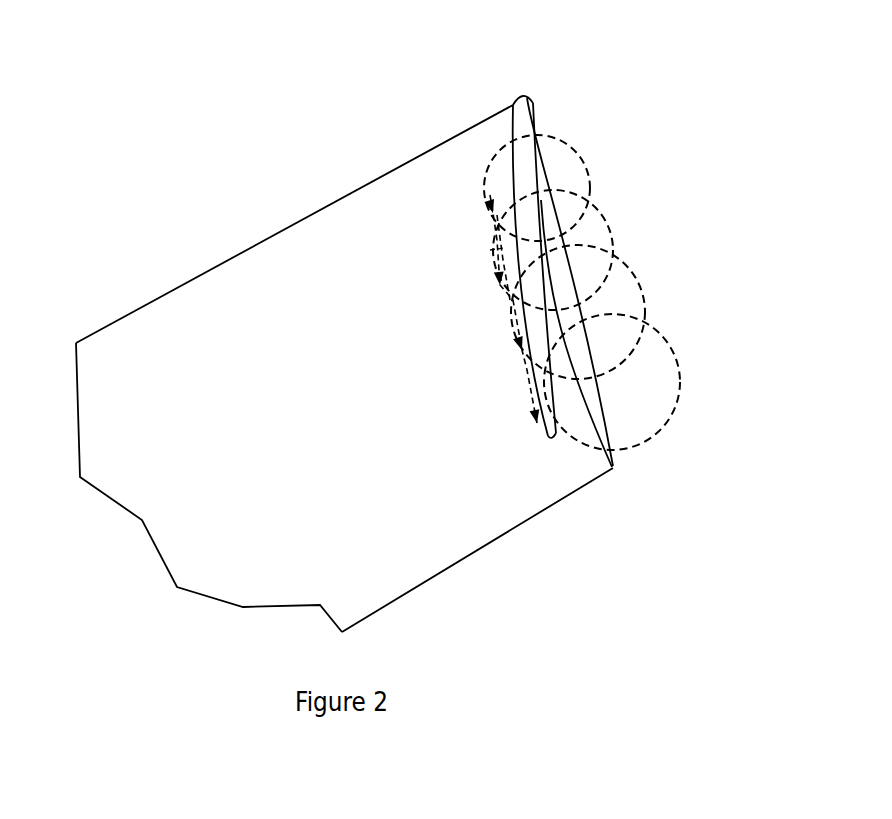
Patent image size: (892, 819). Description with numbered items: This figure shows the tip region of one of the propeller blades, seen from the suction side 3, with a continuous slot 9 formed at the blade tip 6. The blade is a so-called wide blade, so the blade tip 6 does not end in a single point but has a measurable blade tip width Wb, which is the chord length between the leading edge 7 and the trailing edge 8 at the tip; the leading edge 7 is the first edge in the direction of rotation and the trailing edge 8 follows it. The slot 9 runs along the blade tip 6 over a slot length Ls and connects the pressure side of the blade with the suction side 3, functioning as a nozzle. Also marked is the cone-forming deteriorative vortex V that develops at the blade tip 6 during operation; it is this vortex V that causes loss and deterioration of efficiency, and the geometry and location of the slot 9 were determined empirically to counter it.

The suction side 3 is at (195, 400).
The blade tip 6 is at (530, 163).
The leading edge 7 is at (213, 265).
The trailing edge 8 is at (503, 537).
The slot 9 is at (555, 440).
The deteriorative vortex V is at (582, 292).
The slot length Ls is at (487, 210).
The blade tip width Wb is at (623, 463).